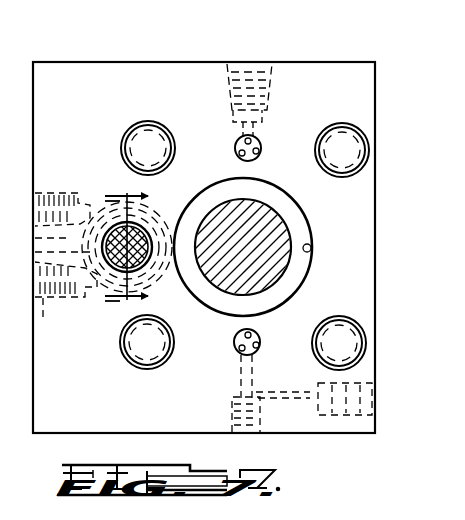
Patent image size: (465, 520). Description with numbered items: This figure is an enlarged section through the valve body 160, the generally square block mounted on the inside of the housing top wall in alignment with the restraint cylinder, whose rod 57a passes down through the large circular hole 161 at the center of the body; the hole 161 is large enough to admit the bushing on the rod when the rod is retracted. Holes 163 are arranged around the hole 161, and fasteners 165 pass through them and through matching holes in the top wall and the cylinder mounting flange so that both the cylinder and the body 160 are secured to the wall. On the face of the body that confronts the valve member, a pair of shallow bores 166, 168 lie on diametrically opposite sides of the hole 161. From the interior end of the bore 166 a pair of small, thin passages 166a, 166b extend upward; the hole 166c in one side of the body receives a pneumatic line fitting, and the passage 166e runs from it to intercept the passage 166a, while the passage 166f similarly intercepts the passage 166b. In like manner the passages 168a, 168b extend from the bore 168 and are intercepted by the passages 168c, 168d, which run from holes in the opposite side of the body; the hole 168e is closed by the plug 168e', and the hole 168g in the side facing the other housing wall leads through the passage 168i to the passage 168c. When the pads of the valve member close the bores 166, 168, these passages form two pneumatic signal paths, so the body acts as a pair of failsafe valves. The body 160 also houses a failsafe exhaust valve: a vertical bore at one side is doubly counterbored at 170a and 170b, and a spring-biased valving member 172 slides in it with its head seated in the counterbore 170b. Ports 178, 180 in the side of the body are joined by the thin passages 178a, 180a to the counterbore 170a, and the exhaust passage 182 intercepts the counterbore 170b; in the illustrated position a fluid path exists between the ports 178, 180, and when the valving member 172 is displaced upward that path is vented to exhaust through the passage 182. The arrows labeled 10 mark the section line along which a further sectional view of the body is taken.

The valve body 160 is at (376, 62).
The large circular hole 161 is at (312, 248).
The rod 57a is at (286, 232).
The counterbore 170a is at (232, 228).
The counterbore 170b is at (233, 251).
The valving member 172 is at (228, 275).
The fasteners 165 is at (148, 140).
The holes 163 is at (122, 135).
The shallow bore 166 is at (260, 154).
The passage 166a is at (258, 142).
The passage 166b is at (258, 158).
The hole 166c is at (279, 76).
The passage 166e is at (233, 130).
The passage 166f is at (234, 160).
The shallow bore 168 is at (258, 333).
The passage 168a is at (258, 375).
The passage 168b is at (236, 335).
The passage 168c is at (232, 377).
The passage 168d is at (236, 366).
The hole 168e is at (206, 414).
The plug 168e' is at (192, 445).
The hole 168g is at (378, 397).
The passage 168i is at (283, 392).
The exhaust passage 182 is at (92, 162).
The section line 10 is at (143, 248).
The hole 178 is at (46, 196).
The passage 178a is at (66, 203).
The hole 180 is at (39, 325).
The passage 180a is at (67, 296).